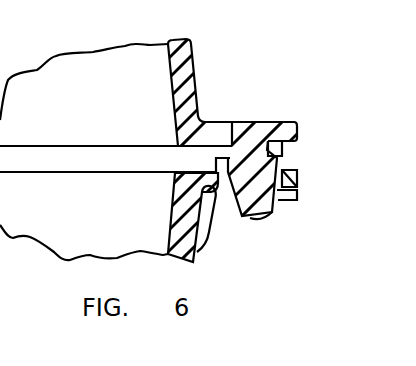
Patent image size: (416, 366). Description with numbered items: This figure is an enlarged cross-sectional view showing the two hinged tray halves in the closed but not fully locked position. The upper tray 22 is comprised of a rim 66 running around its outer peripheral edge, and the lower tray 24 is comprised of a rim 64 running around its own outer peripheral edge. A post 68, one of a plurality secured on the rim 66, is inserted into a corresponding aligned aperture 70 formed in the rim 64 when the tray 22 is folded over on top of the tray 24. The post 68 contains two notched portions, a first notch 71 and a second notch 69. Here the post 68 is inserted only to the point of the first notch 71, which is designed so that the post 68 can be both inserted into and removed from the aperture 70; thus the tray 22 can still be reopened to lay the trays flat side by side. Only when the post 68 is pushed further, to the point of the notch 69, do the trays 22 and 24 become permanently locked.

The tray 22 is at (177, 90).
The tray 24 is at (172, 220).
The rim 64 is at (328, 173).
The rim 66 is at (270, 155).
The post 68 is at (296, 233).
The notch 69 is at (187, 150).
The aperture 70 is at (326, 201).
The notch 71 is at (218, 219).